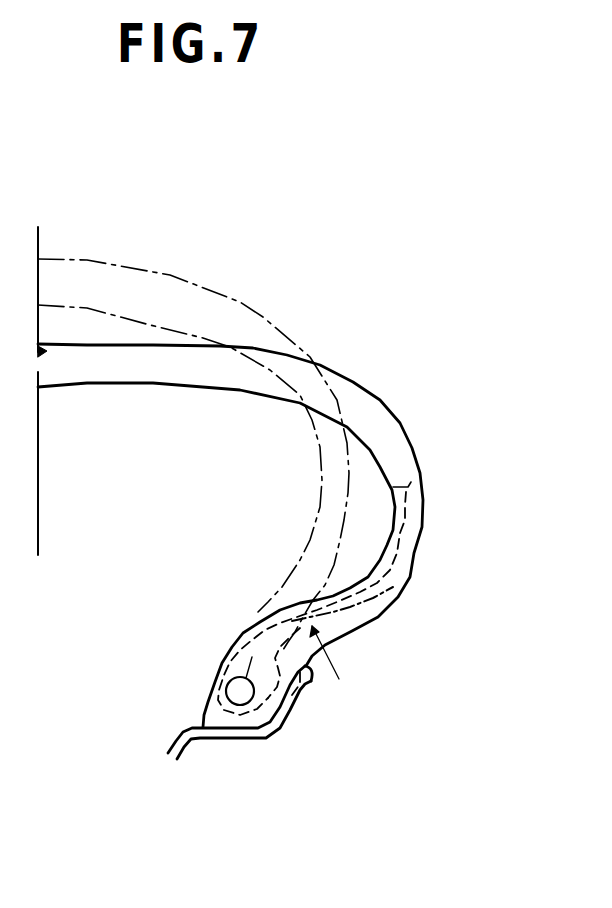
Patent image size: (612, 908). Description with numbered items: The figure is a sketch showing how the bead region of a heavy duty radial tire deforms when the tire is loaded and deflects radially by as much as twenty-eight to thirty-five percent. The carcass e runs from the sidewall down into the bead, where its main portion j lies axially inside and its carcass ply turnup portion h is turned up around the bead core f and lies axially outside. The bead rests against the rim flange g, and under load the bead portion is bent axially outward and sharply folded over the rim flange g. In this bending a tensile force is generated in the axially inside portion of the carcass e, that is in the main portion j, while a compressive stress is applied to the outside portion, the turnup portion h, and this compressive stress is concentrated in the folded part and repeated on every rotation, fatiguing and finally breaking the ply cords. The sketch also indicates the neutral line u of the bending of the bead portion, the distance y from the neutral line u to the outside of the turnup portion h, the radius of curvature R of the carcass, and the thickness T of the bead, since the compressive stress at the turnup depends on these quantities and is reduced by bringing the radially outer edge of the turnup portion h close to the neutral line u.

The radius of curvature of the carcass R is at (333, 662).
The thickness of the bead T is at (277, 538).
The rim flange g is at (333, 742).
The bead core f is at (240, 780).
The carcass ply turnup portion h is at (335, 722).
The carcass e is at (224, 555).
The neutral line in bending u is at (247, 603).
The distance from the neutral line to the outside of the turnup portion y is at (300, 631).
The main portion of the carcass j is at (390, 558).